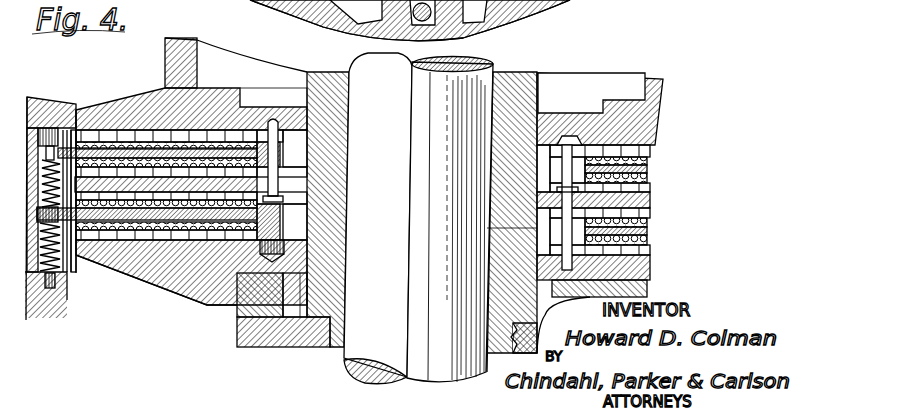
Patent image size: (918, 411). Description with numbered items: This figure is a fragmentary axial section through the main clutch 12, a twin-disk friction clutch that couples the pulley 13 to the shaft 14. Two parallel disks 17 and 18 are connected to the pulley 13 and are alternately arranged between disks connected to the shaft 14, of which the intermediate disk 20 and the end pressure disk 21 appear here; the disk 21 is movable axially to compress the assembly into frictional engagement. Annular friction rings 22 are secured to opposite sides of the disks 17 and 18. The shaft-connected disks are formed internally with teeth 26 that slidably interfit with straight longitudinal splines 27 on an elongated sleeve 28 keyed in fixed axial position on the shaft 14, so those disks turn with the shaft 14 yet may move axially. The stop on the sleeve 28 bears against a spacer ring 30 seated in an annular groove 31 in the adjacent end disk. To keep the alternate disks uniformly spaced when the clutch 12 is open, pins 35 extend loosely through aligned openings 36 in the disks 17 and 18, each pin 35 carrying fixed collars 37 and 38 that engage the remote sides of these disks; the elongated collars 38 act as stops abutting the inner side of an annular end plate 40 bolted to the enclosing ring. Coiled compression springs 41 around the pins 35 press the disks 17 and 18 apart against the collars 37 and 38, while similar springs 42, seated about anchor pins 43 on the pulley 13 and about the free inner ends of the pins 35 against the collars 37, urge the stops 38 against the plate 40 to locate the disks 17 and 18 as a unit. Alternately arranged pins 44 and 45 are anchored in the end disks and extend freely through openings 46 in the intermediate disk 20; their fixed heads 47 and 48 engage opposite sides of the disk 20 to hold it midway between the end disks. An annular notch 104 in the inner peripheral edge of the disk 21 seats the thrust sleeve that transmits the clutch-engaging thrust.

The main clutch 12 is at (164, 303).
The pulley 13 is at (52, 302).
The shaft 14 is at (362, 343).
The disk 17 is at (88, 273).
The disk 18 is at (113, 128).
The disk 20 is at (135, 250).
The disk 21 is at (148, 88).
The annular friction rings 22 is at (650, 242).
The teeth 26 is at (302, 196).
The splines 27 is at (302, 152).
The sleeve 28 is at (330, 278).
The spacer ring 30 is at (238, 310).
The annular groove 31 is at (233, 298).
The pins 35 is at (73, 128).
The openings 36 is at (36, 128).
The collars 37 is at (40, 290).
The collars 38 is at (50, 128).
The annular end plate 40 is at (58, 120).
The coiled compression springs 41 is at (29, 120).
The coiled compression springs 42 is at (58, 270).
The anchor pins 43 is at (50, 287).
The pins 44 is at (525, 228).
The pins 45 is at (276, 142).
The openings 46 is at (290, 184).
The heads 47 is at (537, 186).
The heads 48 is at (283, 205).
The annular notch 104 is at (603, 110).